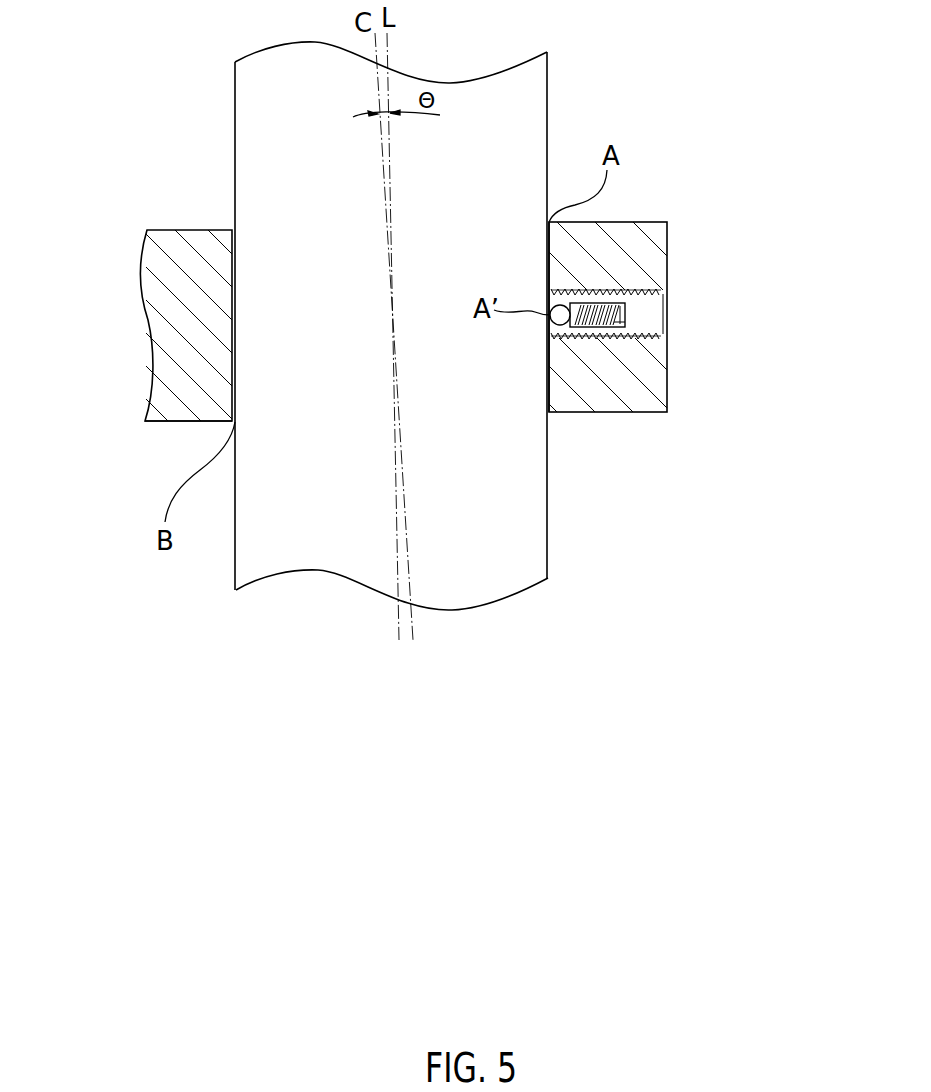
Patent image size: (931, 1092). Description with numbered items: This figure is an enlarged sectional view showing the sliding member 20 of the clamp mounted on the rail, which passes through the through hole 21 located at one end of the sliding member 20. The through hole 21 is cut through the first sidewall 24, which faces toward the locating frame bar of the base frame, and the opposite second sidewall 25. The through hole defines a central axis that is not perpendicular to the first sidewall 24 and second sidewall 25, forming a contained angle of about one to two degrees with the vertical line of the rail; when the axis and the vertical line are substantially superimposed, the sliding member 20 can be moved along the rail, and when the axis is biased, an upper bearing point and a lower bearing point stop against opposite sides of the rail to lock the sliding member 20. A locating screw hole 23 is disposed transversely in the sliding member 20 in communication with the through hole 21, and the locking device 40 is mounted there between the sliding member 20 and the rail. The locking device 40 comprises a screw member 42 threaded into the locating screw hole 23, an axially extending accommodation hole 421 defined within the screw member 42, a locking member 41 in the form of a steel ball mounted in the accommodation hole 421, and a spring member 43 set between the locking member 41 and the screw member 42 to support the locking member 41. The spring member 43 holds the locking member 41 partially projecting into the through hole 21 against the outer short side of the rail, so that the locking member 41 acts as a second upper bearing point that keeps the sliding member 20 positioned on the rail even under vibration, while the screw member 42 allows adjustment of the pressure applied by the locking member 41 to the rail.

The sliding member 20 is at (632, 400).
The through hole 21 is at (553, 383).
The locating screw hole 23 is at (645, 350).
The first sidewall 24 is at (176, 230).
The second sidewall 25 is at (178, 422).
The locking device 40 is at (679, 291).
The locking member 41 is at (563, 302).
The screw member 42 is at (626, 316).
The accommodation hole 421 is at (651, 336).
The spring member 43 is at (598, 303).